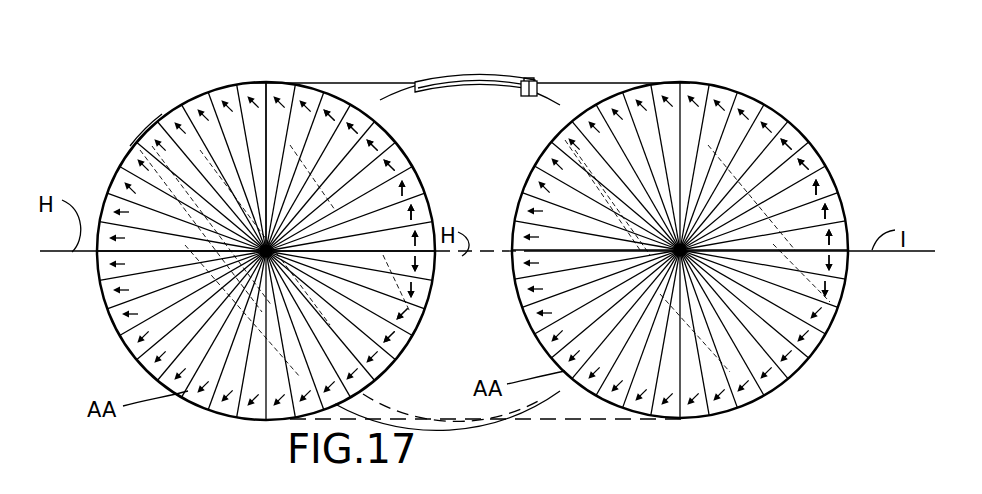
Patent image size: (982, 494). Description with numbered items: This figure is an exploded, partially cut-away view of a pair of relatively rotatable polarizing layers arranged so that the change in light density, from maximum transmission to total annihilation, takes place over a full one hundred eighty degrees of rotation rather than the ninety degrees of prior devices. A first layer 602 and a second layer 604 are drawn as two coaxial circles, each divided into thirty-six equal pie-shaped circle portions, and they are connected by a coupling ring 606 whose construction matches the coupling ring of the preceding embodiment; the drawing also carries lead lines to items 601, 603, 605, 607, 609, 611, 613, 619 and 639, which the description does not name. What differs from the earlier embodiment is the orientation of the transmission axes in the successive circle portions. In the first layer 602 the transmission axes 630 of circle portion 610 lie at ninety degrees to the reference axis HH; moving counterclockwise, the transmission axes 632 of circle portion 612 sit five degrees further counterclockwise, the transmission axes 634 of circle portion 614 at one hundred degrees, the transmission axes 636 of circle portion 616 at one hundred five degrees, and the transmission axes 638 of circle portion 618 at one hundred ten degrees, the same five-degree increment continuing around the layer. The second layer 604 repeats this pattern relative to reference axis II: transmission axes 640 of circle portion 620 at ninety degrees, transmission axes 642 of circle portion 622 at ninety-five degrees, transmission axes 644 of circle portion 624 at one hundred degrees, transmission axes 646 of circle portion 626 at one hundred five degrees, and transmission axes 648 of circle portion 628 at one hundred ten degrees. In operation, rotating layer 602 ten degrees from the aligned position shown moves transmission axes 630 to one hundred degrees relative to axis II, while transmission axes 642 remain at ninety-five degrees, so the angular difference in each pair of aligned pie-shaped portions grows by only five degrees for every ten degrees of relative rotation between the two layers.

The wheel rim 601 is at (118, 336).
The first layer 602 is at (201, 91).
The support arc 603 is at (632, 414).
The second layer 604 is at (668, 83).
The wheel tread 605 is at (186, 113).
The coupling ring 606 is at (464, 78).
The coupling plate 607 is at (527, 86).
The coupling block 609 is at (544, 84).
The circle portion 610 is at (436, 268).
The vertical spoke 611 is at (262, 126).
The circle portion 612 is at (412, 200).
The guide arc 613 is at (548, 98).
The circle portion 614 is at (416, 180).
The circle portion 616 is at (357, 120).
The circle portion 618 is at (374, 140).
The spoke 619 is at (437, 282).
The circle portion 620 is at (848, 262).
The circle portion 622 is at (841, 214).
The circle portion 624 is at (835, 200).
The circle portion 626 is at (826, 182).
The circle portion 628 is at (803, 145).
The transmission axes 630 is at (434, 248).
The transmission axes 632 is at (414, 222).
The transmission axes 634 is at (424, 172).
The transmission axes 636 is at (398, 132).
The transmission axes 638 is at (352, 108).
The force arrow 639 is at (437, 300).
The transmission axes 640 is at (848, 250).
The transmission axes 642 is at (846, 234).
The transmission axes 644 is at (836, 184).
The transmission axes 646 is at (817, 170).
The transmission axes 648 is at (787, 118).